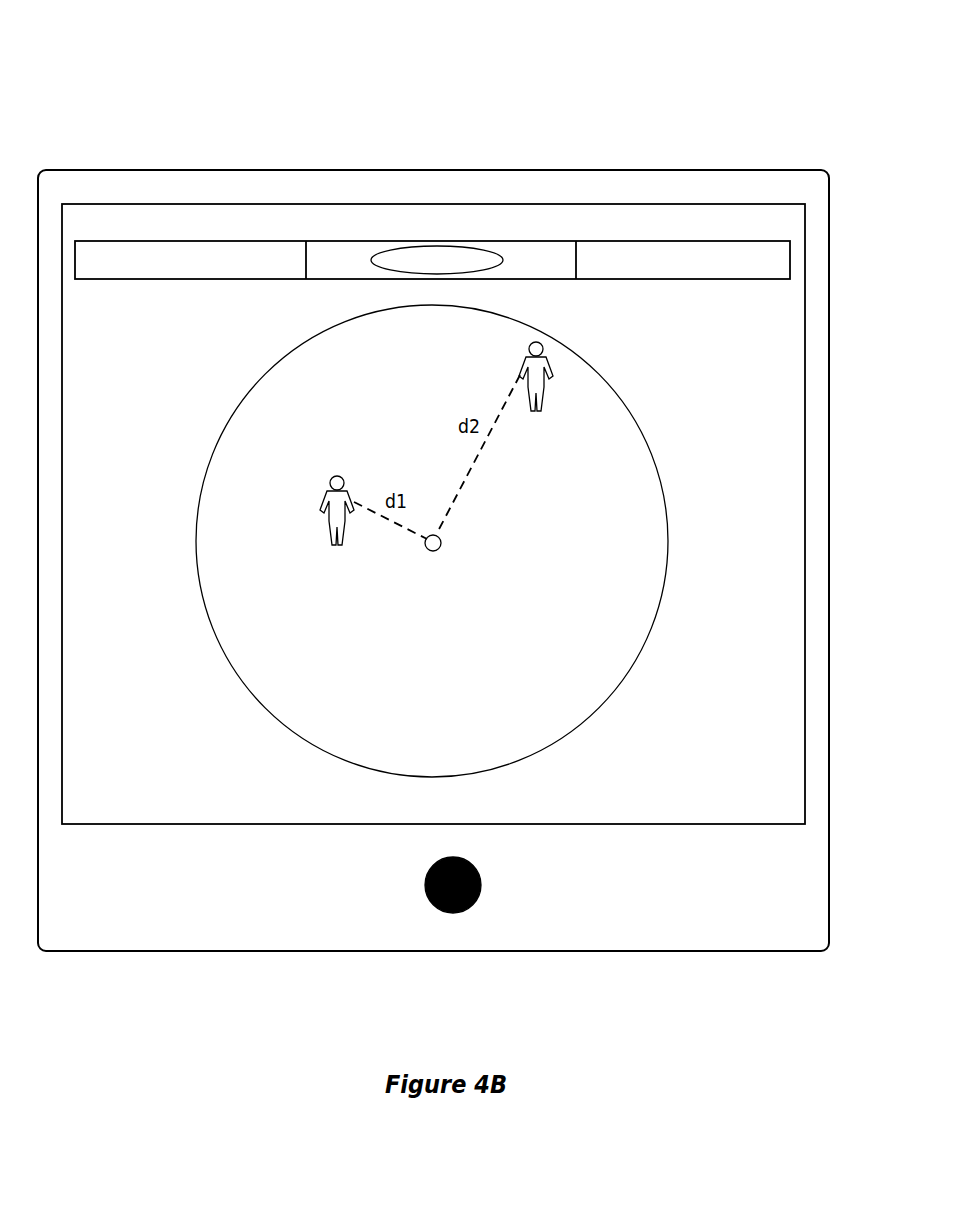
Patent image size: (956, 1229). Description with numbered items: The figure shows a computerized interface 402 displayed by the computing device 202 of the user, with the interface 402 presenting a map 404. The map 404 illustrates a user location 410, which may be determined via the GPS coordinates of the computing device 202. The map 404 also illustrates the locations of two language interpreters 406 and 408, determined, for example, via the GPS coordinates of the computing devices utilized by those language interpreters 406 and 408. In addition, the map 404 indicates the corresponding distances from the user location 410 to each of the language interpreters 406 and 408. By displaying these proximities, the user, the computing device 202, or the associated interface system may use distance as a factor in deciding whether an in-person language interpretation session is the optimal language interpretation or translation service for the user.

The computing device 202 is at (392, 63).
The computerized interface 402 is at (497, 205).
The map 404 is at (240, 406).
The language interpreter 406 is at (330, 488).
The language interpreter 408 is at (527, 357).
The user location 410 is at (441, 540).